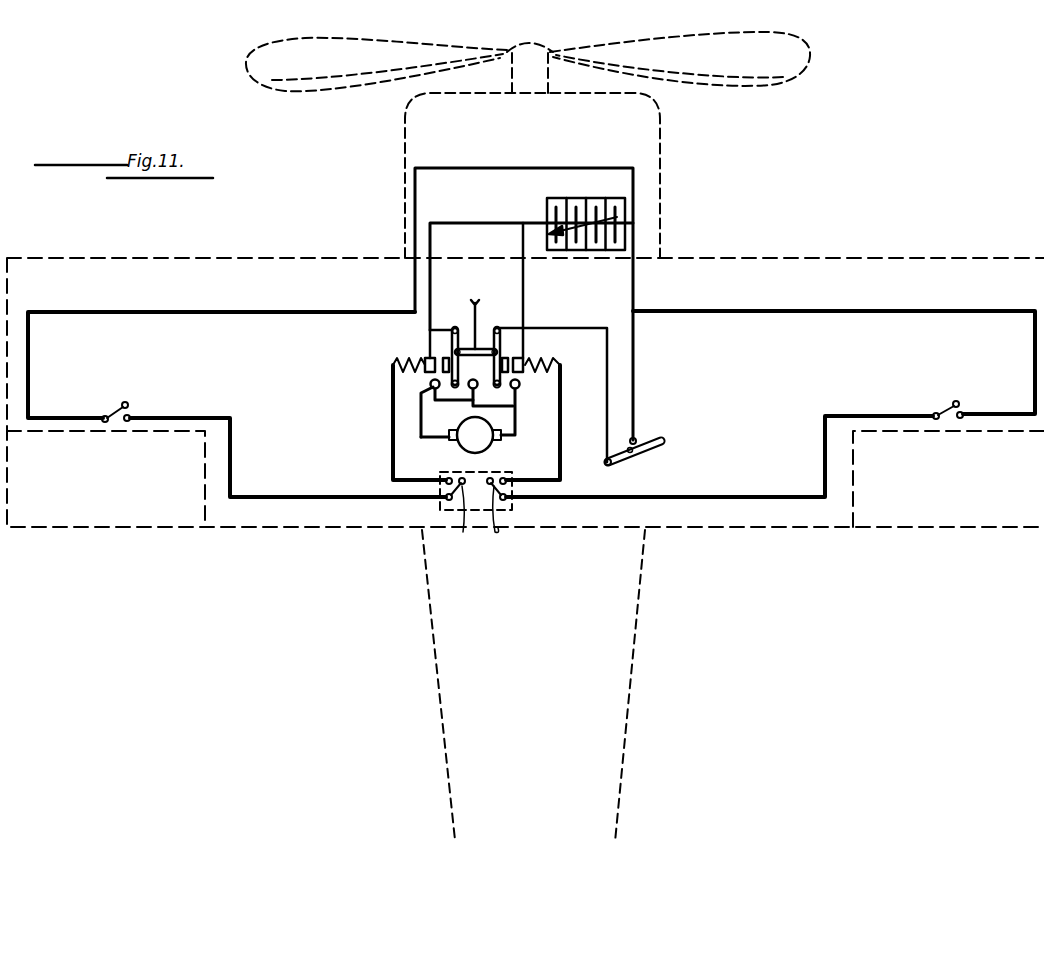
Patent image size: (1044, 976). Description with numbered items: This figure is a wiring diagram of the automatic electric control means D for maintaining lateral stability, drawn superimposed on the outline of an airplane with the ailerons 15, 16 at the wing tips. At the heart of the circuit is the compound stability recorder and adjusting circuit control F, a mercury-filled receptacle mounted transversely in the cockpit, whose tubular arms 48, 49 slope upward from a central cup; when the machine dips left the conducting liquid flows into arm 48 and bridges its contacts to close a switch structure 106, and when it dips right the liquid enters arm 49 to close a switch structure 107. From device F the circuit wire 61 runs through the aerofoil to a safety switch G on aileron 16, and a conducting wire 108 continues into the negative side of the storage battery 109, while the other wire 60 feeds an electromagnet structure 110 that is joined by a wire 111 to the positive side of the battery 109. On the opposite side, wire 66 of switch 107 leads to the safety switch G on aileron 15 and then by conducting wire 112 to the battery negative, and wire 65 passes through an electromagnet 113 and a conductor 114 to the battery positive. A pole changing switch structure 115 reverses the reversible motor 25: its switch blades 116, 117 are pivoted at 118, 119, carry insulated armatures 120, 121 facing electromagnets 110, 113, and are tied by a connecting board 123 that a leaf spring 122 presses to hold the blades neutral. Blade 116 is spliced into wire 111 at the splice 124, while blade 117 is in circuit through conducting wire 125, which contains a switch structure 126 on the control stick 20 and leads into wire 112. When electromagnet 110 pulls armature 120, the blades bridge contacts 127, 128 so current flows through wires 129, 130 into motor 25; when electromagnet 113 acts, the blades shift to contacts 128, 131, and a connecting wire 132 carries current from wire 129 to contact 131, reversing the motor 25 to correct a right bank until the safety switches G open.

The automatic electrical control means D is at (672, 311).
The compound stability recorder and adjusting circuit control F is at (485, 530).
The safety switch G is at (118, 426).
The aileron 15 is at (903, 512).
The aileron 16 is at (135, 516).
The control stick 20 is at (661, 443).
The motor 25 is at (490, 447).
The tubular arm 48 is at (437, 505).
The tubular arm 49 is at (510, 505).
The circuit wire 60 is at (393, 440).
The circuit wire 61 is at (341, 480).
The circuit wire 65 is at (561, 453).
The circuit wire 66 is at (695, 497).
The switch structure 106 is at (463, 524).
The switch structure 107 is at (513, 522).
The conducting wire 108 is at (301, 289).
The storage battery 109 is at (598, 186).
The electromagnet structure 110 is at (392, 368).
The wire 111 is at (497, 223).
The conducting wire 112 is at (882, 311).
The electromagnet 113 is at (556, 363).
The conductor 114 is at (524, 286).
The pole changing switch structure 115 is at (464, 312).
The switch blade 116 is at (450, 340).
The switch blade 117 is at (500, 338).
The pivot 118 is at (451, 328).
The pivot 119 is at (492, 328).
The armature 120 is at (446, 359).
The armature 121 is at (512, 362).
The spring 122 is at (490, 313).
The connecting board 123 is at (472, 355).
The splice 124 is at (446, 284).
The conducting wire 125 is at (580, 326).
The switch structure 126 is at (626, 456).
The contact 127 is at (439, 412).
The contact 128 is at (453, 393).
The wire 129 is at (421, 438).
The wire 130 is at (514, 426).
The contact 131 is at (520, 385).
The connecting wire 132 is at (514, 406).